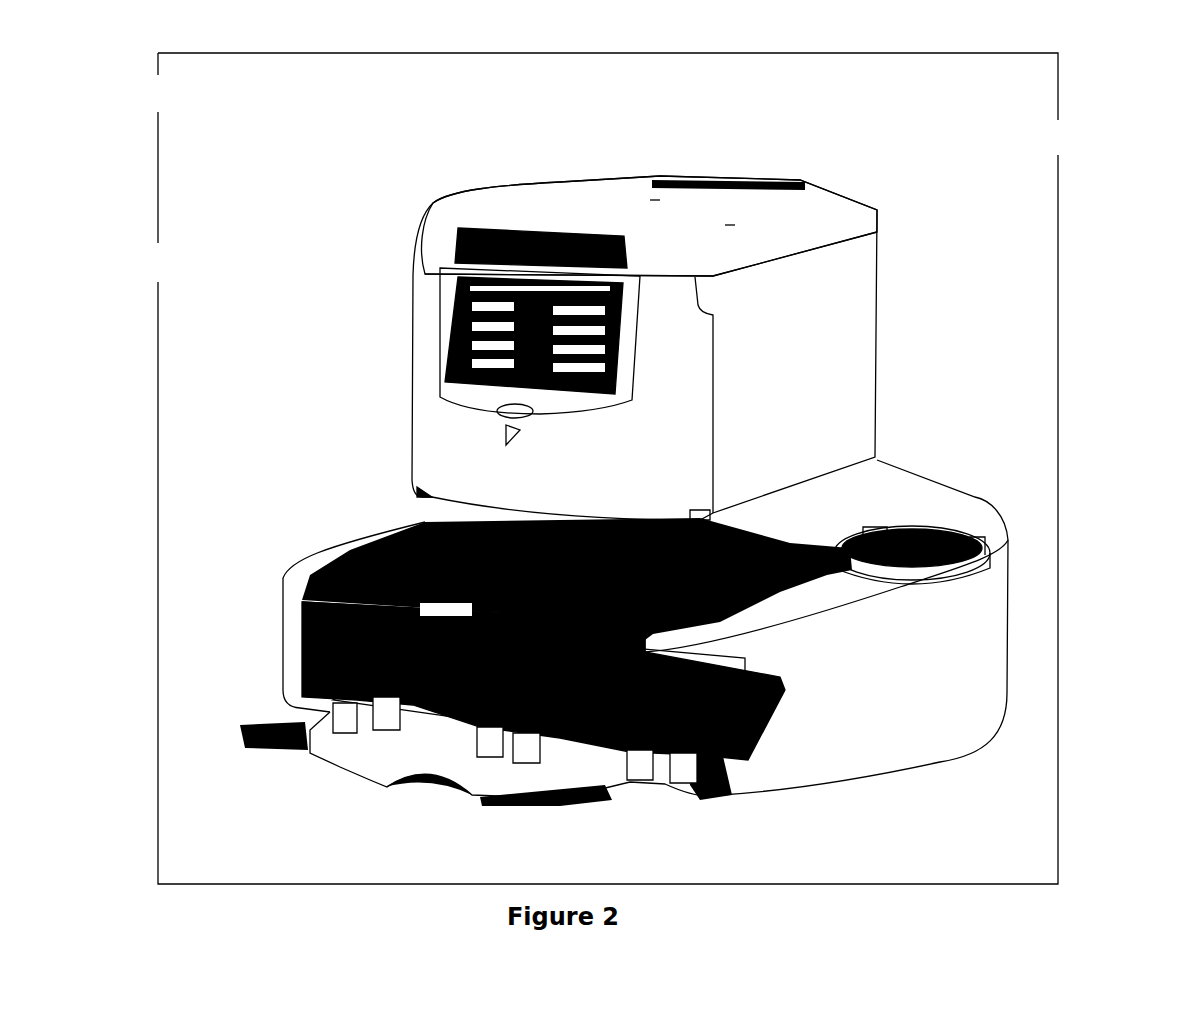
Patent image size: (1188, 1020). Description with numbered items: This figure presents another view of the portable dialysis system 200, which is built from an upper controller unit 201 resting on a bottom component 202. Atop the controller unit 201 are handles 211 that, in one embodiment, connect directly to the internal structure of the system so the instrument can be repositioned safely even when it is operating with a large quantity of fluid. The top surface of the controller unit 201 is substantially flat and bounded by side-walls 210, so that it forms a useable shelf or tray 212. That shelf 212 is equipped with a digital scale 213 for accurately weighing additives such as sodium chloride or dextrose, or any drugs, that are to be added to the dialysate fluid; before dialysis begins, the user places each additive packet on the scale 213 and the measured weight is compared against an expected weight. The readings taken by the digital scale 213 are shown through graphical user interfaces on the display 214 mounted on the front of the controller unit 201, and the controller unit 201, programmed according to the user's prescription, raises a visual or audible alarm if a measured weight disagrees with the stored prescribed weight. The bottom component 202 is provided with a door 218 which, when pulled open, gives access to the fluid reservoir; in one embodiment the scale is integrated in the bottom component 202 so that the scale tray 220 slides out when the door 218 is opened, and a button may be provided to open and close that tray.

The portable dialysis system 200 is at (608, 457).
The controller unit 201 is at (411, 269).
The side-walls 210 is at (526, 188).
The handles 211 is at (734, 180).
The digital scale 213 is at (669, 195).
The shelf or tray 212 is at (742, 220).
The display 214 is at (451, 322).
The bottom component 202 is at (275, 656).
The scale tray 220 is at (721, 708).
The door 218 is at (461, 797).